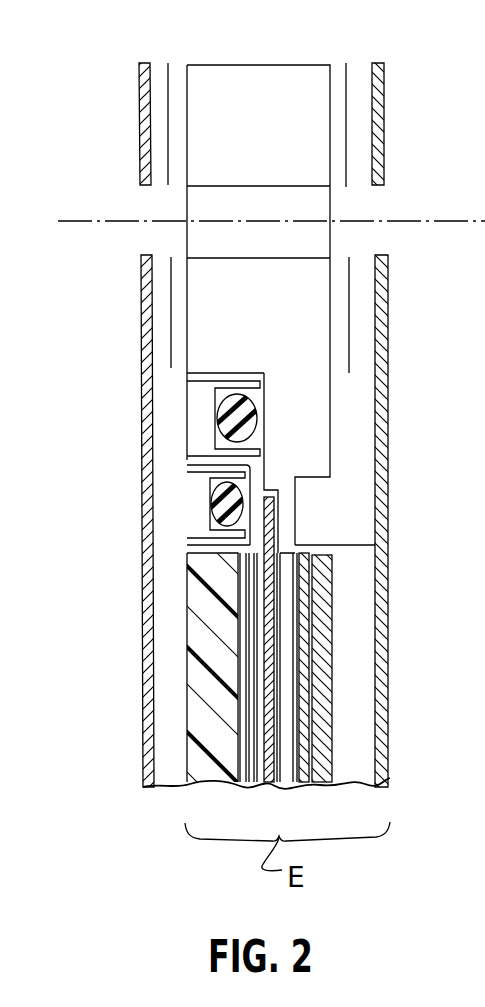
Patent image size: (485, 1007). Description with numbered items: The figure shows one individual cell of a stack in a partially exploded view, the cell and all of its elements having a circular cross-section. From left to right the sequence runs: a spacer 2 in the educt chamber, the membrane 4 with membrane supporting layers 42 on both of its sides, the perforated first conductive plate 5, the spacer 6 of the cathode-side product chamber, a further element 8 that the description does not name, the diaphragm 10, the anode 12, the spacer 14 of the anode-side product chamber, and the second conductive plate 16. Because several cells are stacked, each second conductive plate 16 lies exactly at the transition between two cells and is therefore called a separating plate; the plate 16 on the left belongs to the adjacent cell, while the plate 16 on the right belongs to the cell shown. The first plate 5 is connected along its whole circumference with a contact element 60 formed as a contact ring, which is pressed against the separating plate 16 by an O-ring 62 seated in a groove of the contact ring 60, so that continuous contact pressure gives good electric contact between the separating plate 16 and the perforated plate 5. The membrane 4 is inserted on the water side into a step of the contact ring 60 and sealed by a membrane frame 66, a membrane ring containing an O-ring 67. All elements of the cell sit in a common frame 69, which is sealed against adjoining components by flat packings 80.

The spacer 2 is at (188, 758).
The membrane 4 is at (245, 541).
The first conductive plate 5 is at (268, 628).
The spacer 6 is at (278, 663).
The gap 8 is at (290, 702).
The diaphragm 10 is at (343, 545).
The anode 12 is at (300, 598).
The spacer 14 is at (322, 655).
The second conductive plate 16 is at (139, 63).
The membrane supporting layers 42 is at (240, 588).
The contact element 60 is at (193, 406).
The O-ring 62 is at (260, 432).
The membrane frame 66 is at (193, 483).
The O-ring 67 is at (212, 512).
The common frame 69 is at (258, 85).
The flat packings 80 is at (168, 63).